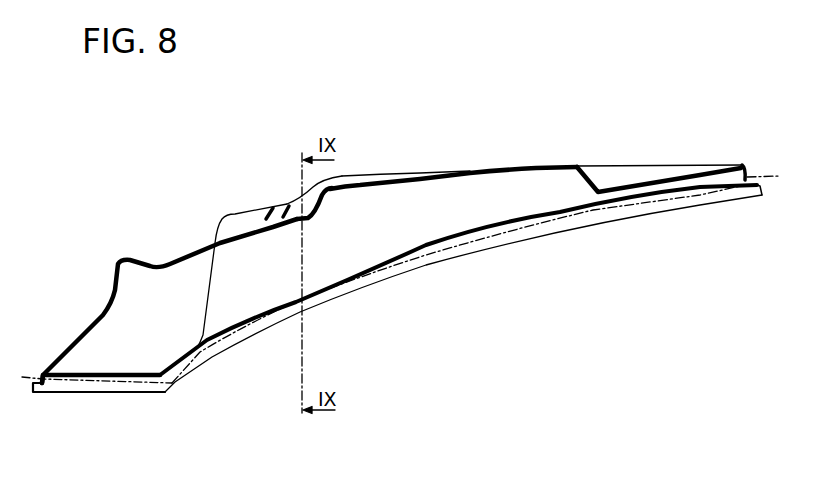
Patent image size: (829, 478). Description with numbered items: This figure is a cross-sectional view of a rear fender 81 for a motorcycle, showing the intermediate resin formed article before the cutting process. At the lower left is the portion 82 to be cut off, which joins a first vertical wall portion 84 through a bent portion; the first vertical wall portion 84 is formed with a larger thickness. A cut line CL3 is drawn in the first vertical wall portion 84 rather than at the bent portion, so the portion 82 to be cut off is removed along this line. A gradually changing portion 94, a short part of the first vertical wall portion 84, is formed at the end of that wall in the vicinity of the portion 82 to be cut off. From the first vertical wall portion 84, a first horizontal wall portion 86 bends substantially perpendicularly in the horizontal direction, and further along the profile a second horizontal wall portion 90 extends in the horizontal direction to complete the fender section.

The rear fender 81 is at (147, 108).
The portion to be cut off 82 is at (113, 384).
The first vertical wall portion 84 is at (345, 213).
The first horizontal wall portion 86 is at (293, 213).
The second horizontal wall portion 90 is at (342, 176).
The gradually changing portion 94 is at (427, 240).
The cut line CL3 is at (758, 177).